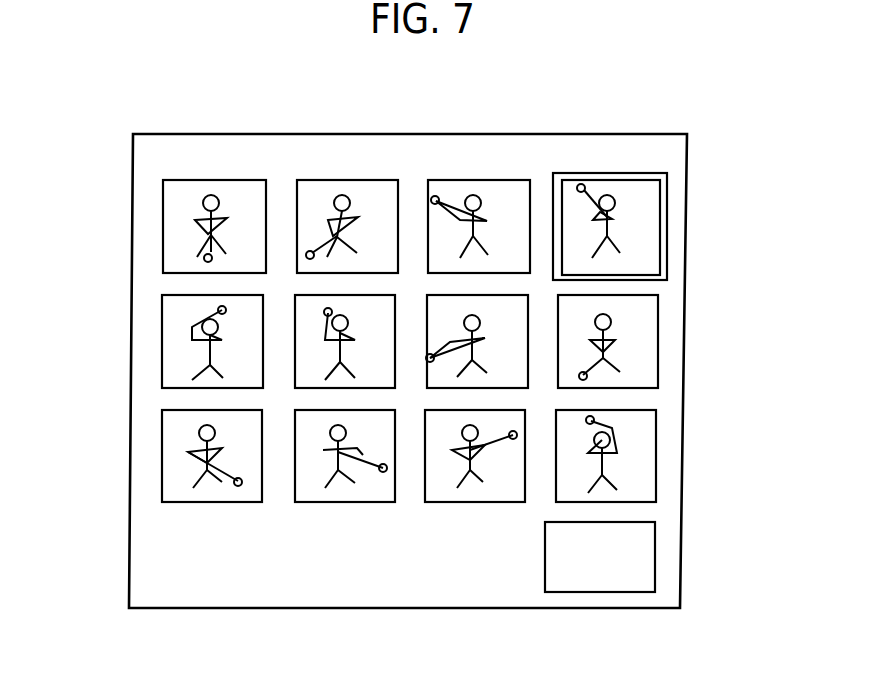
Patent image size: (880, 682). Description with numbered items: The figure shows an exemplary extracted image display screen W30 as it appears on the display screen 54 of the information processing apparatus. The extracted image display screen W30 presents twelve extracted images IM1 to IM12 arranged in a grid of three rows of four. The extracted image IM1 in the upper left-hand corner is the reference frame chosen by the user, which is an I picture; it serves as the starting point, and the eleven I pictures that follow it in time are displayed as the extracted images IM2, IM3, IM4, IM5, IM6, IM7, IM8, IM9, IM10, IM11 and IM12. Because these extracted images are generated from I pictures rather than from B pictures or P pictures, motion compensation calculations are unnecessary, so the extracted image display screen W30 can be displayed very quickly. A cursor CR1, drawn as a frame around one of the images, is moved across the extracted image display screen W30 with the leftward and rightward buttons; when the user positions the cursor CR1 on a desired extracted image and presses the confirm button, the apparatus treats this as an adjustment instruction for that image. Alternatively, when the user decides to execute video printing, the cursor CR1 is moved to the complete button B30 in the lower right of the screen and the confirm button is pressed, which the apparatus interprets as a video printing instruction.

The extracted image display screen W30 is at (697, 96).
The display screen 54 is at (537, 133).
The extracted image IM1 is at (224, 180).
The extracted image IM2 is at (342, 180).
The extracted image IM3 is at (461, 180).
The extracted image IM4 is at (614, 180).
The extracted image IM5 is at (162, 340).
The extracted image IM6 is at (295, 343).
The extracted image IM7 is at (427, 345).
The extracted image IM8 is at (658, 320).
The extracted image IM9 is at (162, 455).
The extracted image IM10 is at (328, 502).
The extracted image IM11 is at (497, 502).
The extracted image IM12 is at (656, 447).
The cursor CR1 is at (667, 208).
The complete button B30 is at (655, 555).